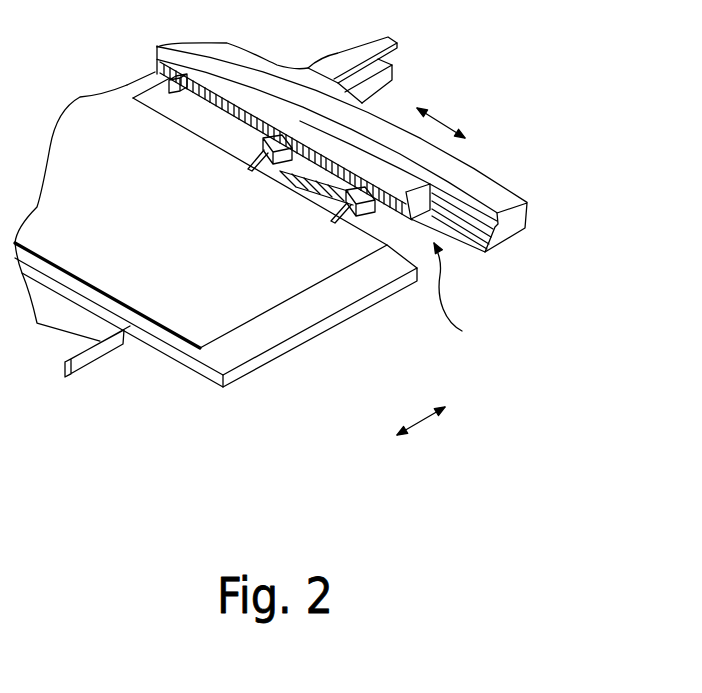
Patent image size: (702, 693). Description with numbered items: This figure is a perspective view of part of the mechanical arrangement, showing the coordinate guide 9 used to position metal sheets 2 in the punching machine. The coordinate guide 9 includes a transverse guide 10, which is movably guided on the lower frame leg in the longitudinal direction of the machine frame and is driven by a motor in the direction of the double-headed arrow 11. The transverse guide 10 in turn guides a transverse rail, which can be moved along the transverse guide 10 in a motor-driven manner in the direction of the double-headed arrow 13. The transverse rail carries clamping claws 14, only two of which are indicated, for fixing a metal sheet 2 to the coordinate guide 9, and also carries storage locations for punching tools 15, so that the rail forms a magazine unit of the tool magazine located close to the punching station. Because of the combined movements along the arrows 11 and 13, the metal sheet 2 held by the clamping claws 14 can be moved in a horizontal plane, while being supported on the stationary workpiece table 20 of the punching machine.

The metal sheet 2 is at (182, 316).
The stationary workpiece table 20 is at (234, 362).
The transverse guide 10 is at (513, 227).
The clamping claws 14 is at (357, 218).
The punching tools 15 is at (180, 95).
The double-headed arrow 13 is at (440, 122).
The coordinate guide 9 is at (457, 295).
The double-headed arrow 11 is at (421, 422).